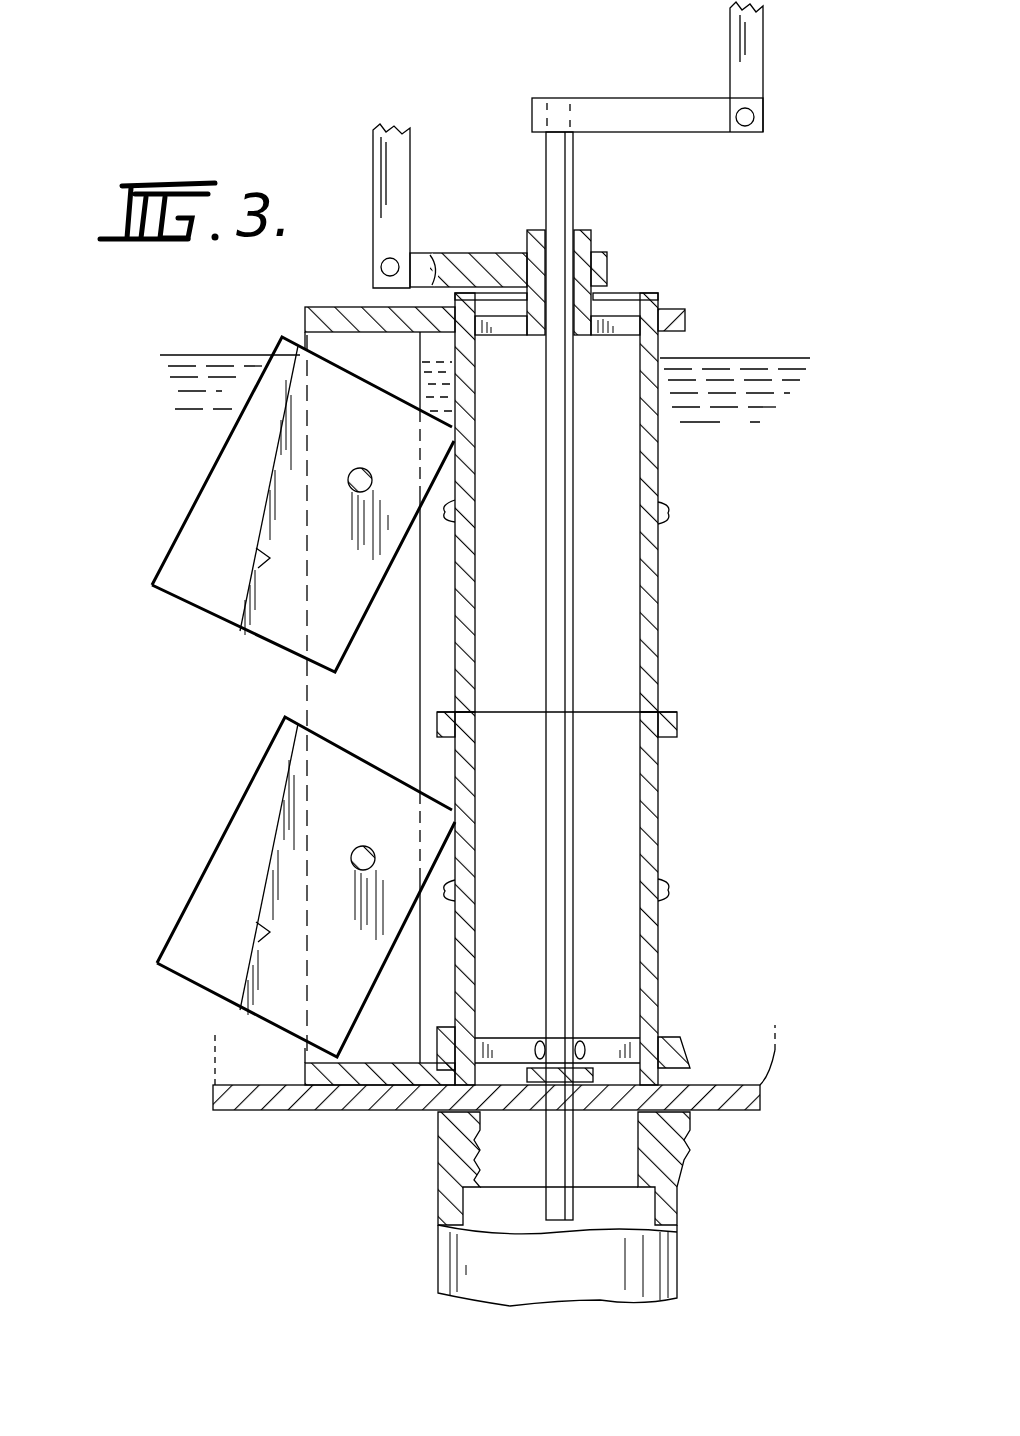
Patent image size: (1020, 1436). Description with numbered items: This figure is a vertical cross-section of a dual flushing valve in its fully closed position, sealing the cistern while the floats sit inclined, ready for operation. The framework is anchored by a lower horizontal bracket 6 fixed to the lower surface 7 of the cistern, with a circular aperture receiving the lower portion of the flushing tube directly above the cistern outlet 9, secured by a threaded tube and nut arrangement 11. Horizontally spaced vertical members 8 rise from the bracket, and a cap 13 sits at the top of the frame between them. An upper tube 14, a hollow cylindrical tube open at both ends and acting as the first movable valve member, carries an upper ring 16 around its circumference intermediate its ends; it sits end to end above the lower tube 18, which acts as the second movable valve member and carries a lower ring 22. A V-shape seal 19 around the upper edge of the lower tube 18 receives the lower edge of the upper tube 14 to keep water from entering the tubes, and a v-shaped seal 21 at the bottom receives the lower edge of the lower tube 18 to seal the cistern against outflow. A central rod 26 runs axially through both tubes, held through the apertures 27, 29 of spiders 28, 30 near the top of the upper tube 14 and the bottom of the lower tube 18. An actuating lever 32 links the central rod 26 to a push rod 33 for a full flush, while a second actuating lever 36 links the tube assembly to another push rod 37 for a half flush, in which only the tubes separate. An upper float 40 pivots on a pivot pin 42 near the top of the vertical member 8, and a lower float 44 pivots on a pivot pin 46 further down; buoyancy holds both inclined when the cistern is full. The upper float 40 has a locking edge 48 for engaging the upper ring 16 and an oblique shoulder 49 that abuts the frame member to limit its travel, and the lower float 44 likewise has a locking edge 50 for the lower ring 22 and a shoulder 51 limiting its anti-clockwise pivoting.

The lower horizontal bracket 6 is at (367, 1077).
The lower surface of the cistern 7 is at (292, 1102).
The vertically extending members 8 is at (318, 692).
The outlet of the cistern 9 is at (677, 1215).
The threaded tube and nut arrangement 11 is at (685, 1122).
The cap 13 is at (305, 310).
The upper tube 14 is at (658, 615).
The upper ring 16 is at (673, 516).
The lower tube 18 is at (652, 832).
The V-shape seal 19 is at (675, 712).
The v-shaped seal 21 is at (675, 1035).
The lower ring 22 is at (666, 882).
The central rod 26 is at (575, 192).
The aperture 27 is at (593, 230).
The spider 28 is at (612, 328).
The aperture 29 is at (510, 1042).
The spider 30 is at (590, 1050).
The actuating lever 32 is at (612, 108).
The push rod 33 is at (737, 62).
The actuating lever 36 is at (470, 253).
The push rod 37 is at (372, 165).
The upper float 40 is at (260, 438).
The pivot pin 42 is at (348, 482).
The lower float 44 is at (260, 792).
The pivot pin 46 is at (350, 860).
The locking edge 48 is at (474, 437).
The shoulder 49 is at (258, 547).
The locking edge 50 is at (476, 820).
The shoulder 51 is at (260, 914).